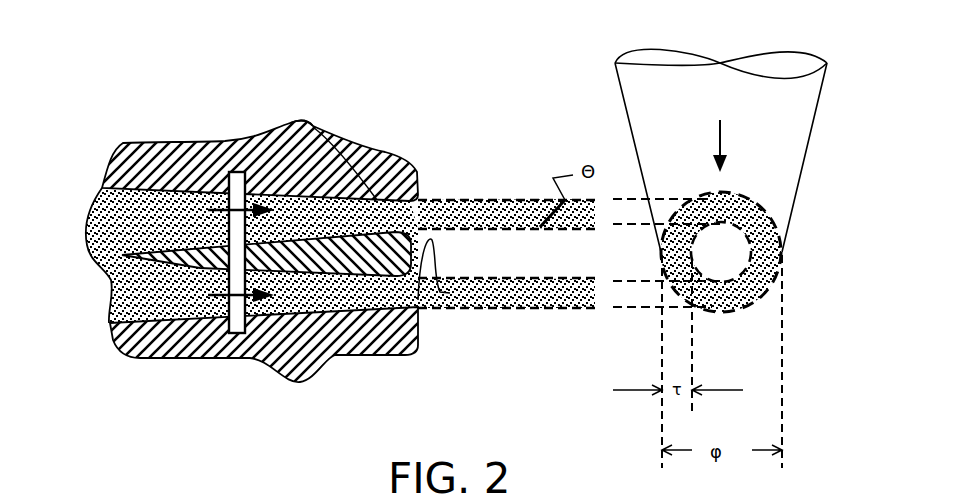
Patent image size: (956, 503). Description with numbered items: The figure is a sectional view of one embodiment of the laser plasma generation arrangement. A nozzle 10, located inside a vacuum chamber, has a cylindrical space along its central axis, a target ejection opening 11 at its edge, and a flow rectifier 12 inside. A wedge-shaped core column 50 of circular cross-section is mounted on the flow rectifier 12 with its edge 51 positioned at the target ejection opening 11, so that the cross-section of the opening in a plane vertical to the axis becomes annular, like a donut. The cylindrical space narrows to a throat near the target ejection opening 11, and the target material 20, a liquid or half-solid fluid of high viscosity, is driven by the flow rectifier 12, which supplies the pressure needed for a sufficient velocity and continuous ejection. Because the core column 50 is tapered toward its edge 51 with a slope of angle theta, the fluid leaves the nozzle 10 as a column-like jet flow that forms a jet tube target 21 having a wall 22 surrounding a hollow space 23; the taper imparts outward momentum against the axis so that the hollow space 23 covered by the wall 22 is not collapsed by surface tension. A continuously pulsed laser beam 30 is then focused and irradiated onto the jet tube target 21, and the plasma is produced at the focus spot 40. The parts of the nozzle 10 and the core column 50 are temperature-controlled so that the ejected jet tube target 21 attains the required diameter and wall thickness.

The nozzle 10 is at (415, 98).
The target ejection opening 11 is at (420, 194).
The flow rectifier 12 is at (233, 172).
The target material 20 is at (147, 297).
The jet tube target 21 is at (460, 310).
The wall 22 is at (678, 265).
The hollow space 23 is at (731, 240).
The laser beam 30 is at (621, 62).
The focus spot 40 is at (840, 33).
The core column 50 is at (295, 123).
The edge 51 is at (450, 293).